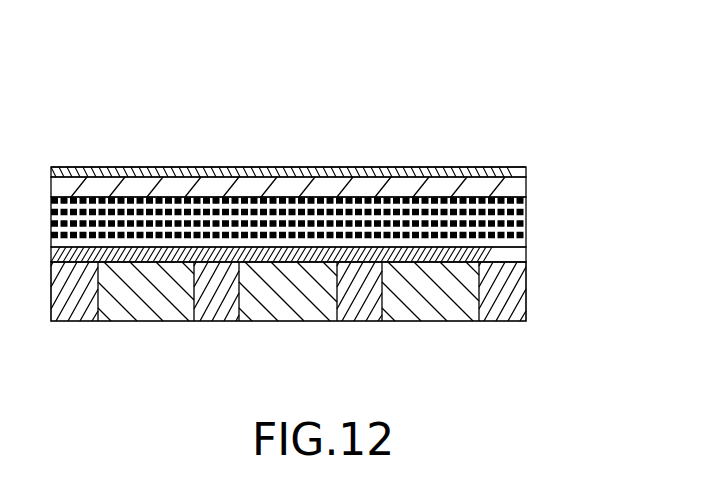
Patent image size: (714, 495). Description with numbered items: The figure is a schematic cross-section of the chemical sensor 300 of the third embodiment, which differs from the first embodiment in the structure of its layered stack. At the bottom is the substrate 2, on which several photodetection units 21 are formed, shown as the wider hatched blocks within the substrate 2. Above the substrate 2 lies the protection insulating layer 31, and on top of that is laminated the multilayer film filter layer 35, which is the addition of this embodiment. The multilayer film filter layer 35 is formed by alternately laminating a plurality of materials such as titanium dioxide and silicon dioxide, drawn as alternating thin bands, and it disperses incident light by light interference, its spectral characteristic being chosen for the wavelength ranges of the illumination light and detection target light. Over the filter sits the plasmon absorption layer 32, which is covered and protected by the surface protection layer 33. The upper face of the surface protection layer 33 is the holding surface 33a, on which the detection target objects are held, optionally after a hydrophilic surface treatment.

The chemical sensor 300 is at (328, 193).
The surface protection layer 33 is at (527, 172).
The holding surface 33a is at (235, 167).
The plasmon absorption layer 32 is at (522, 183).
The multilayer film filter layer 35 is at (528, 196).
The protection insulating layer 31 is at (525, 258).
The substrate 2 is at (522, 290).
The photodetection units 21 is at (150, 310).